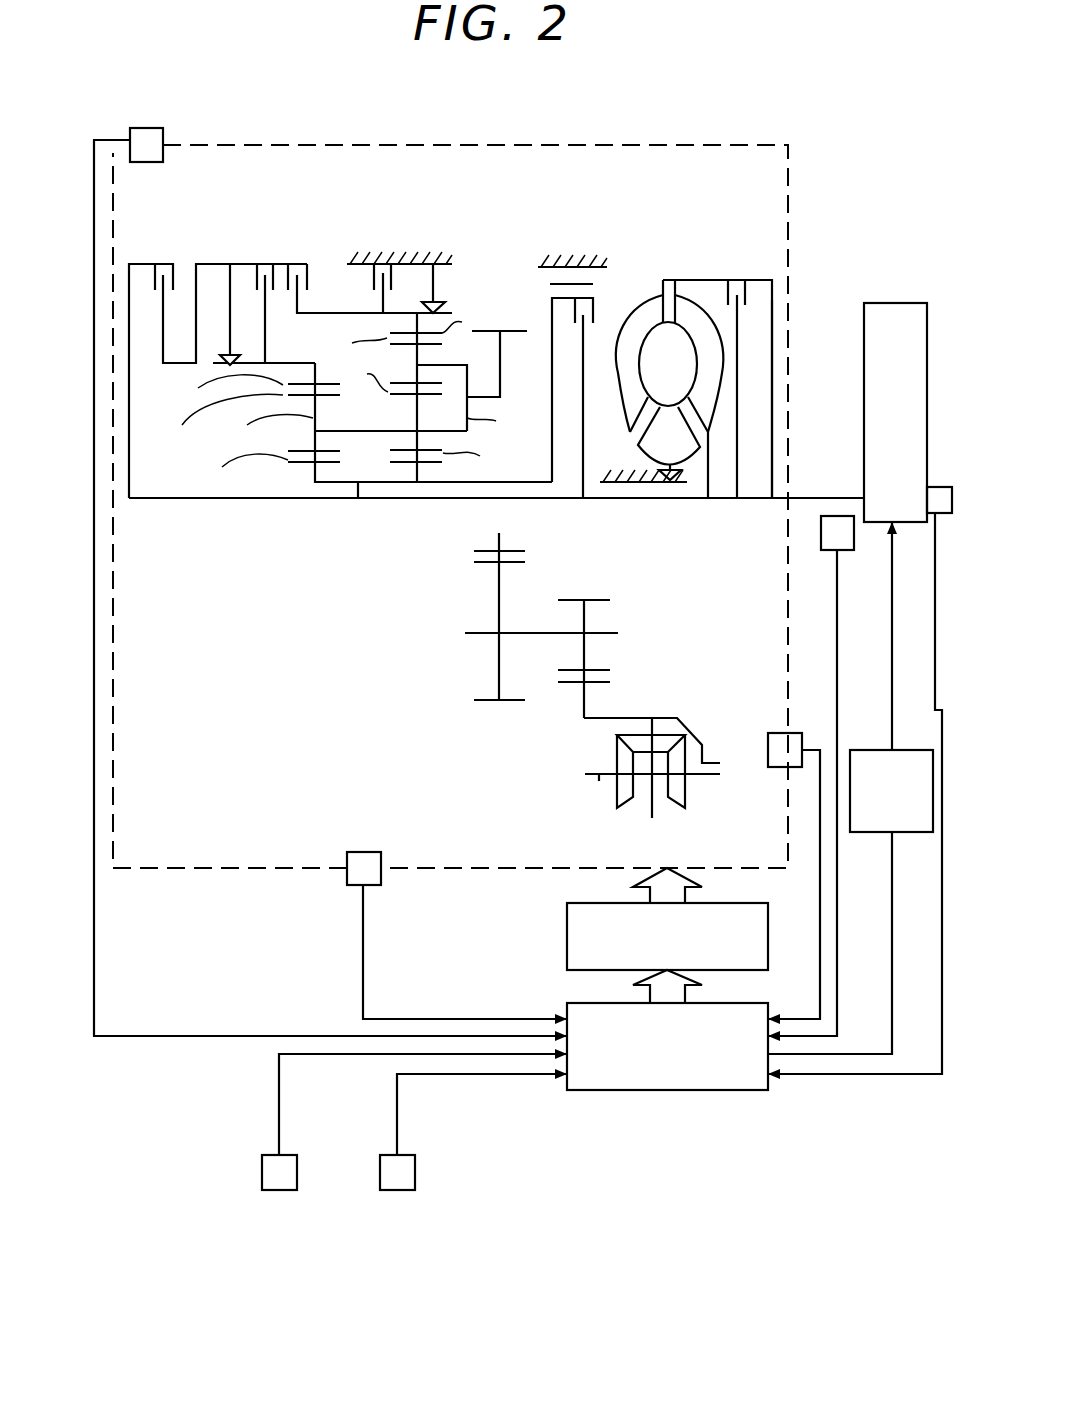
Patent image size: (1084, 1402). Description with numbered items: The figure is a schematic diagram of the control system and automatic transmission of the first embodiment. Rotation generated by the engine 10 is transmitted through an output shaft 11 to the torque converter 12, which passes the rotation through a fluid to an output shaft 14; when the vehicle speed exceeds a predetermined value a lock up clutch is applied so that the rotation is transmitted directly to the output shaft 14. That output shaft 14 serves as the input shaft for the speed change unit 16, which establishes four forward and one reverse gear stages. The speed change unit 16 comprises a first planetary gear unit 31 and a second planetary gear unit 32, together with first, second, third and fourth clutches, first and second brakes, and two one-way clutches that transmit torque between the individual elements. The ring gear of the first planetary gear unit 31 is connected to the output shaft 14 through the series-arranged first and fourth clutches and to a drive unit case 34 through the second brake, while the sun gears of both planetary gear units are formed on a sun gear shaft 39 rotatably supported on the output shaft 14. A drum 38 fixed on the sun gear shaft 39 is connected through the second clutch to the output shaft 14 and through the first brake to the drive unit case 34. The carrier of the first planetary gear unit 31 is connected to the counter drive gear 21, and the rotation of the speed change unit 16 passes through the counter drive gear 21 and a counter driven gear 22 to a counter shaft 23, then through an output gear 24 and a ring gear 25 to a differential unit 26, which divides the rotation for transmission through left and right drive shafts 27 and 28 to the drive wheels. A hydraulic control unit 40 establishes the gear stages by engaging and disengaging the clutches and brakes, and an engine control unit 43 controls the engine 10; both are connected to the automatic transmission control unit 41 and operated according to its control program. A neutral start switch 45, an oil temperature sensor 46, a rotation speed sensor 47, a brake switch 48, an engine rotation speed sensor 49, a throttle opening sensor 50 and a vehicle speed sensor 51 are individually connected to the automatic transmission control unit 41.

The engine 10 is at (893, 322).
The output shaft 11 is at (773, 343).
The torque converter 12 is at (680, 262).
The output shaft 14 is at (627, 500).
The speed change unit 16 is at (458, 195).
The counter drive gear 21 is at (482, 548).
The counter driven gear 22 is at (480, 565).
The counter shaft 23 is at (543, 632).
The output gear 24 is at (603, 600).
The ring gear 25 is at (567, 687).
The differential unit 26 is at (683, 712).
The drive shaft 27 is at (600, 778).
The drive shaft 28 is at (702, 778).
The first planetary gear unit 31 is at (451, 298).
The second planetary gear unit 32 is at (255, 480).
The drive unit case 34 is at (607, 248).
The drum 38 is at (553, 367).
The sun gear shaft 39 is at (358, 492).
The hydraulic control unit 40 is at (565, 935).
The automatic transmission control unit 41 is at (680, 1090).
The engine control unit 43 is at (898, 775).
The neutral start switch 45 is at (278, 1192).
The oil temperature sensor 46 is at (374, 885).
The rotation speed sensor 47 is at (147, 140).
The brake switch 48 is at (395, 1192).
The engine rotation speed sensor 49 is at (843, 538).
The throttle opening sensor 50 is at (943, 487).
The vehicle speed sensor 51 is at (790, 747).